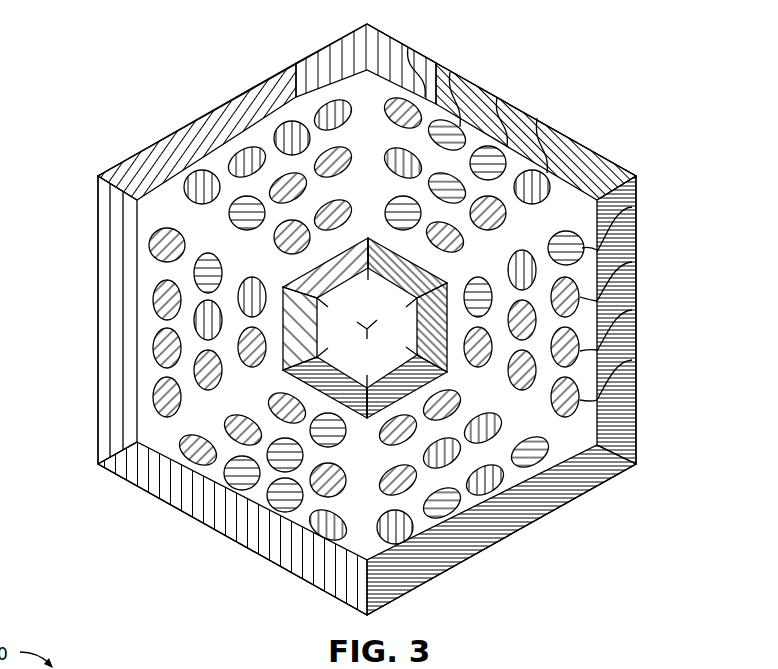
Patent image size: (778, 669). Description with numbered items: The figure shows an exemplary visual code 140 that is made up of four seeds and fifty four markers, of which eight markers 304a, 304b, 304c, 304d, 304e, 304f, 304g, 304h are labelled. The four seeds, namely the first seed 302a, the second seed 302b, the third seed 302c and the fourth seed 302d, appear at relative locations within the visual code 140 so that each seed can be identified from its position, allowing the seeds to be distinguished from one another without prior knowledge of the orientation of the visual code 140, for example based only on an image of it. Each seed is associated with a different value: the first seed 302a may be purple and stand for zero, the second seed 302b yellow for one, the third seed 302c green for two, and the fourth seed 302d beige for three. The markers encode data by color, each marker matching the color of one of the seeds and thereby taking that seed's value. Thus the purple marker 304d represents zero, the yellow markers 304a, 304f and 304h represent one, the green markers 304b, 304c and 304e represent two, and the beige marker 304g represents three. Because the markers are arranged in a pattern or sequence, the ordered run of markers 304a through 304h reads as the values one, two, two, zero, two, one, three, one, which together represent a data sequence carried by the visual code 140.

The visual code 140 is at (78, 58).
The first seed 302a is at (296, 64).
The second seed 302b is at (294, 282).
The third seed 302c is at (290, 382).
The fourth seed 302d is at (447, 370).
The marker 304a is at (408, 47).
The marker 304b is at (450, 72).
The marker 304c is at (497, 97).
The marker 304d is at (537, 118).
The marker 304e is at (633, 208).
The marker 304f is at (633, 263).
The marker 304g is at (633, 310).
The marker 304h is at (633, 360).